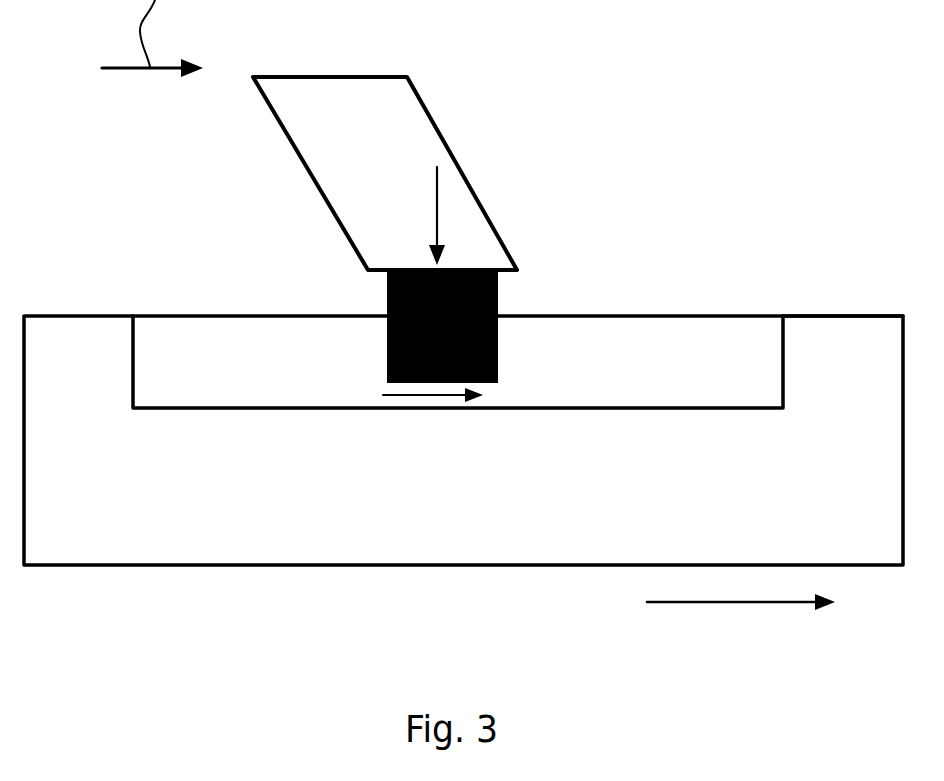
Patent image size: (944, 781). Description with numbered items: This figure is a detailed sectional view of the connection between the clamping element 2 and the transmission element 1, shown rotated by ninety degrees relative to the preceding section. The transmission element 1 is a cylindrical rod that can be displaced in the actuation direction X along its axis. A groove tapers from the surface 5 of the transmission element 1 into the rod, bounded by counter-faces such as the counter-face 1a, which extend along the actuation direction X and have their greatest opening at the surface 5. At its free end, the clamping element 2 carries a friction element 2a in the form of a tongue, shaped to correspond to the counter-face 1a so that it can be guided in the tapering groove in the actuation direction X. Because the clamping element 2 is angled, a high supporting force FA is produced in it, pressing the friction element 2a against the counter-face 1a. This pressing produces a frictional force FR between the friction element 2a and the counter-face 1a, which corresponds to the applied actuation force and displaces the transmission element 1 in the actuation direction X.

The transmission element 1 is at (229, 538).
The counter-face 1a is at (630, 342).
The clamping element 2 is at (307, 166).
The friction element 2a is at (387, 290).
The surface 5 is at (828, 315).
The supporting force FA is at (437, 217).
The frictional force FR is at (412, 397).
The actuation direction X is at (728, 602).